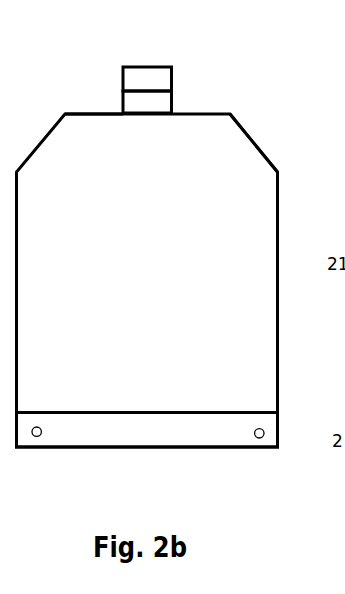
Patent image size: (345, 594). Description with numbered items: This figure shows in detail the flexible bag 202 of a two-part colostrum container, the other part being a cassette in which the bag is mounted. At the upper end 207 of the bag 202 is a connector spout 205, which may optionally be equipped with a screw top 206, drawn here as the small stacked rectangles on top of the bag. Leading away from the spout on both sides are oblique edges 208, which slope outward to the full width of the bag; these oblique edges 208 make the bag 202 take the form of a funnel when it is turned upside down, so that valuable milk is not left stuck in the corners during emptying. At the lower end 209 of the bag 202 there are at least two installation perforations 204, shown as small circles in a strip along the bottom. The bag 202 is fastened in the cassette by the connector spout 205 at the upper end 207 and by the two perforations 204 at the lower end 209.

The bag 202 is at (147, 280).
The installation perforations 204 is at (148, 464).
The connector spout 205 is at (172, 103).
The screw top 206 is at (172, 76).
The upper end 207 is at (79, 98).
The oblique edges 208 is at (253, 138).
The lower end 209 is at (60, 465).